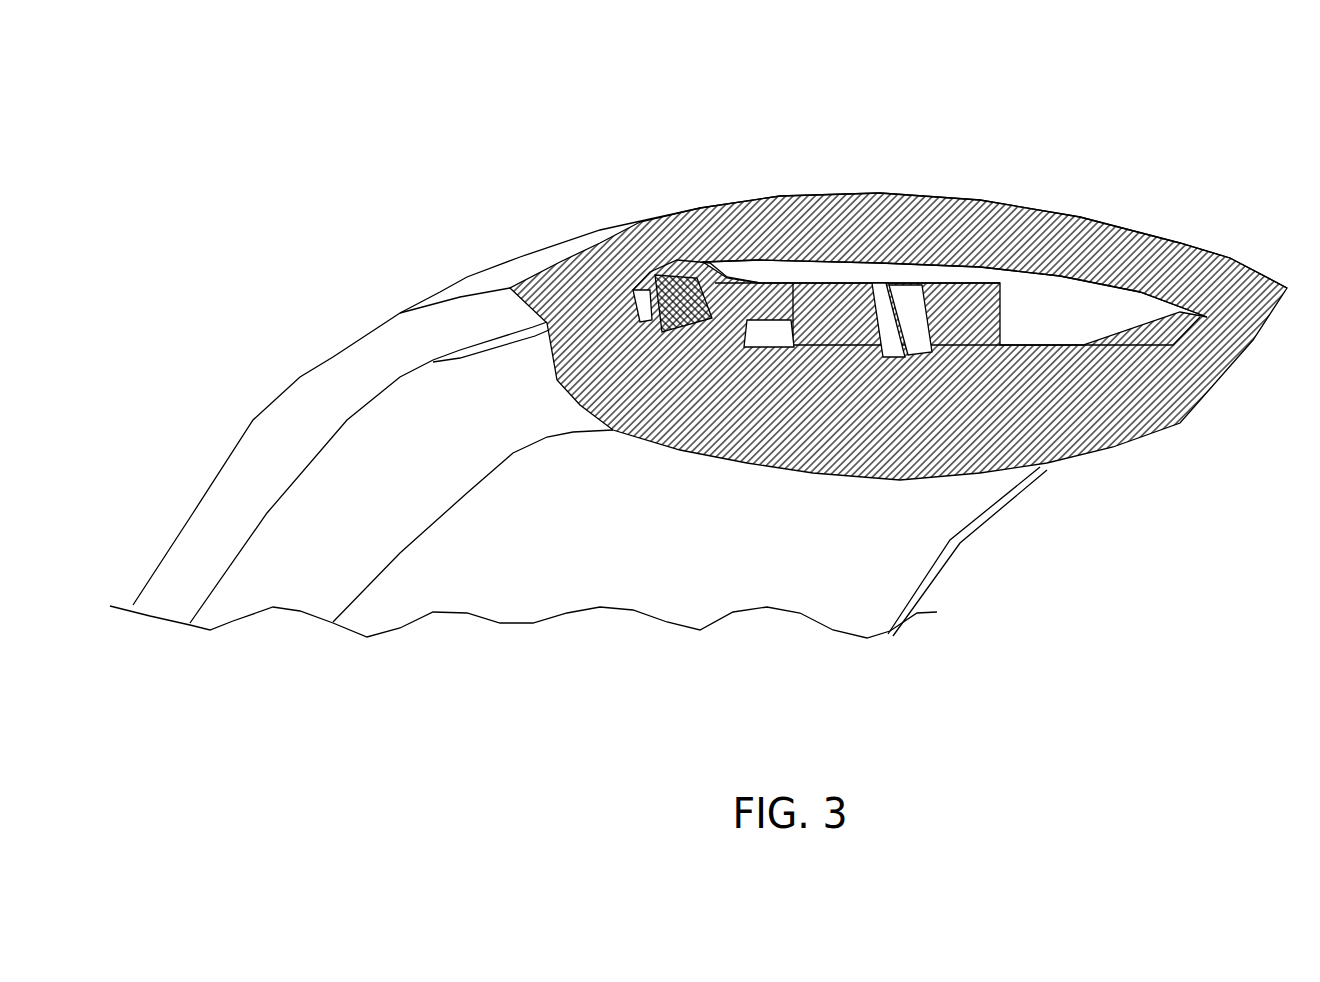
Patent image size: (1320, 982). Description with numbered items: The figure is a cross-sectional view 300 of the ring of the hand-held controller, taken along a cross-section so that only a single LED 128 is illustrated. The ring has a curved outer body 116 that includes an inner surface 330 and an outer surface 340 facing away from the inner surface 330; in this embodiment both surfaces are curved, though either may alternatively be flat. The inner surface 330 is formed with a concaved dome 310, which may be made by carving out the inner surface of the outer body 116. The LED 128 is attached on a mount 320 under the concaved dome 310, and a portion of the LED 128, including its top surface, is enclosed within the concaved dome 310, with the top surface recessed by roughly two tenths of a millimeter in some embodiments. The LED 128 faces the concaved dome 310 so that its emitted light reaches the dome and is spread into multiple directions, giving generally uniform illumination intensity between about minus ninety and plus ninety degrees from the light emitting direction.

The cross-sectional view 300 is at (748, 63).
The outer body 116 is at (698, 374).
The outer surface 340 is at (710, 371).
The inner surface 330 is at (997, 247).
The concaved dome 310 is at (920, 243).
The mount 320 is at (623, 395).
The LED 128 is at (566, 356).